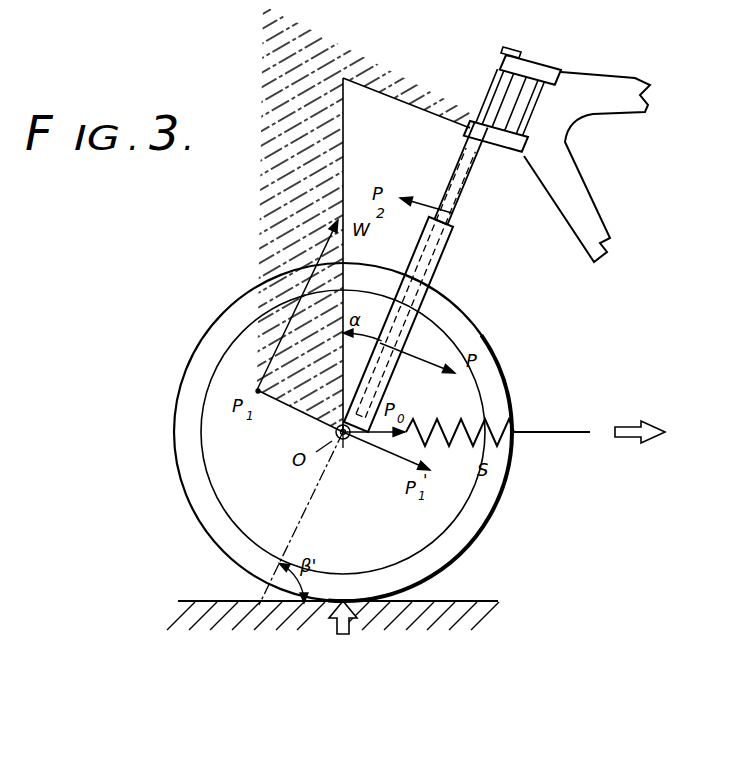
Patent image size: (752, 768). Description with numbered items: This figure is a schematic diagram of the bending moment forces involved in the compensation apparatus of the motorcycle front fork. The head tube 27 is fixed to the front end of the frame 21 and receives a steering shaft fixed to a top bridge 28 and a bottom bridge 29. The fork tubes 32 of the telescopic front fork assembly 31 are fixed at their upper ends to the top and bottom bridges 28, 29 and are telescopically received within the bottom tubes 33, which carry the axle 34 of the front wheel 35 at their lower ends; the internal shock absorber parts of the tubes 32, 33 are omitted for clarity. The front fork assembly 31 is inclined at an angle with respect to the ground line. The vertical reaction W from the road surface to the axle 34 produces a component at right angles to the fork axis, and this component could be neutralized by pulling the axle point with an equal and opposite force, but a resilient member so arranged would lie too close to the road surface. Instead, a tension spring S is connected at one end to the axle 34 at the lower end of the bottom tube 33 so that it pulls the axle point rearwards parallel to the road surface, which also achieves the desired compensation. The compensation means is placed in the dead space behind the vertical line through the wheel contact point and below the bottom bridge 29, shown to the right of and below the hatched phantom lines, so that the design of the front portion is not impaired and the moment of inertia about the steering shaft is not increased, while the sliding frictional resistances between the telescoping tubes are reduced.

The frame 21 is at (632, 95).
The head tube 27 is at (542, 118).
The top bridge 28 is at (540, 62).
The bottom bridge 29 is at (514, 152).
The telescopic front fork assembly 31 is at (447, 270).
The fork tubes 32 is at (463, 168).
The bottom tubes 33 is at (389, 376).
The axle 34 is at (344, 447).
The front wheel 35 is at (476, 525).